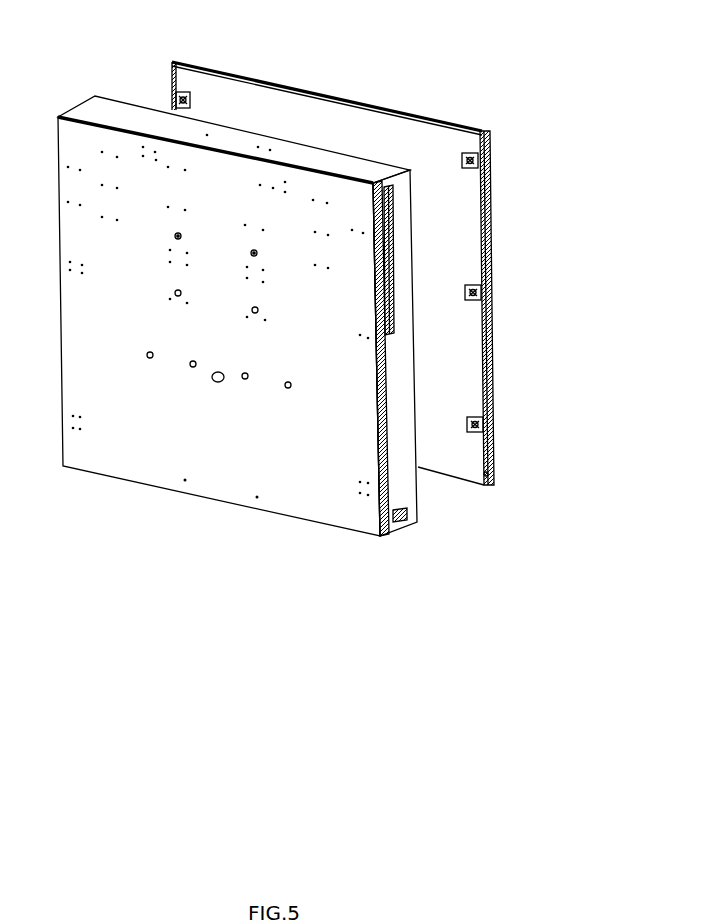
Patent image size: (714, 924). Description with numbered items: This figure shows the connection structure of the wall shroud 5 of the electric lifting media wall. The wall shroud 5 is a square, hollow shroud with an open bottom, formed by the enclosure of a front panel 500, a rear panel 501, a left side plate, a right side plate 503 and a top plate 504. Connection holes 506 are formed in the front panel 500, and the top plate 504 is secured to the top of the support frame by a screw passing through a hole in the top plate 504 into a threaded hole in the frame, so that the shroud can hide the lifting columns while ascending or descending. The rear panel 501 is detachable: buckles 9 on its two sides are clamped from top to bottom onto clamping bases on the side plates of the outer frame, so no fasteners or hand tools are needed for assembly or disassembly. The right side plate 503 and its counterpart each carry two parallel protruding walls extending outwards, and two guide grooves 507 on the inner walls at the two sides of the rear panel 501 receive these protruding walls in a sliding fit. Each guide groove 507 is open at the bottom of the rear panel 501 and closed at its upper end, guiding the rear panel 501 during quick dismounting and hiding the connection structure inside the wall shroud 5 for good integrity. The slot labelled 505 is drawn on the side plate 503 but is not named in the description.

The wall shroud 5 is at (167, 510).
The front panel 500 is at (244, 277).
The rear panel 501 is at (355, 256).
The right side plate 503 is at (483, 353).
The top plate 504 is at (128, 118).
The slot 505 is at (391, 277).
The connection holes 506 is at (254, 253).
The guide grooves 507 is at (171, 105).
The buckle 9 is at (487, 152).